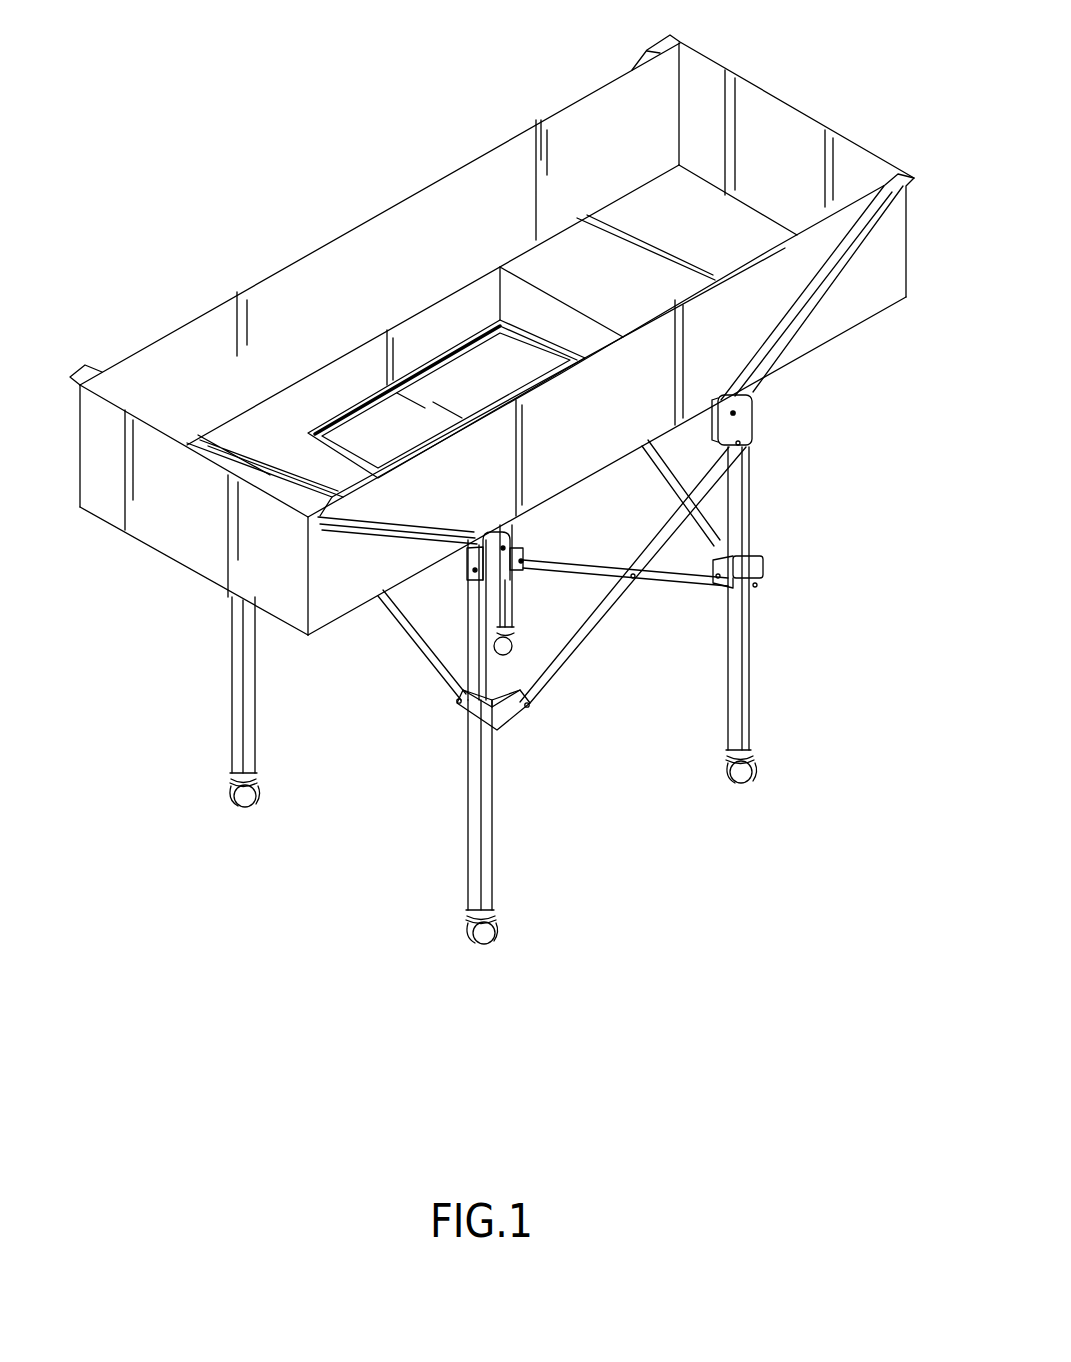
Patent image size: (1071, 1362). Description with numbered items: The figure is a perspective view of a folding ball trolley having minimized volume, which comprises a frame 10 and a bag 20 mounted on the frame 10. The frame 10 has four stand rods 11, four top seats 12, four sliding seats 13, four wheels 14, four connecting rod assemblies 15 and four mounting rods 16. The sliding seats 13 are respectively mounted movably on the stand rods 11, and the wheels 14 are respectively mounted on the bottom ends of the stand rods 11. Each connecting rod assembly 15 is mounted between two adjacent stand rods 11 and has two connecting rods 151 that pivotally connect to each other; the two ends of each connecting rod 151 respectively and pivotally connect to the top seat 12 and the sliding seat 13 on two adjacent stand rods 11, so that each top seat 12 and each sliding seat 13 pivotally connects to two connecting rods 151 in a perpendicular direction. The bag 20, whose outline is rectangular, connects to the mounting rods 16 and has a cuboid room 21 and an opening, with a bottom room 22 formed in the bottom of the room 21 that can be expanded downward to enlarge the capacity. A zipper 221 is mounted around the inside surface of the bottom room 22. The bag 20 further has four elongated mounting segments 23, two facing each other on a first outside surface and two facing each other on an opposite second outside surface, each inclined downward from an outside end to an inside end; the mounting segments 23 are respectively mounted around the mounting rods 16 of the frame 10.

The frame 10 is at (462, 693).
The stand rod 11 is at (472, 845).
The top seat 12 is at (474, 562).
The sliding seat 13 is at (474, 723).
The wheel 14 is at (485, 940).
The connecting rod assembly 15 is at (590, 571).
The connecting rod 151 is at (697, 573).
The mounting rod 16 is at (717, 443).
The bag 20 is at (483, 335).
The room 21 is at (307, 317).
The bottom room 22 is at (432, 298).
The zipper 221 is at (477, 337).
The mounting segment 23 is at (813, 295).